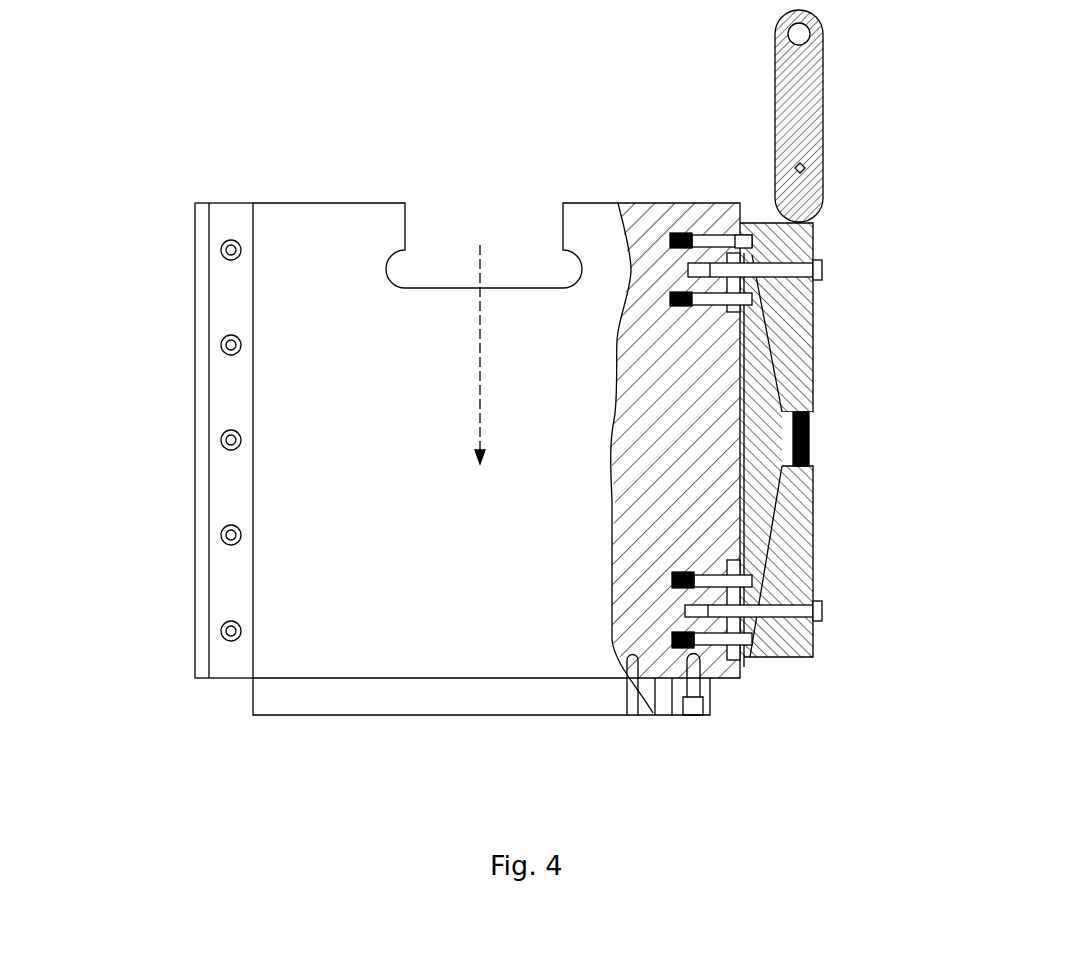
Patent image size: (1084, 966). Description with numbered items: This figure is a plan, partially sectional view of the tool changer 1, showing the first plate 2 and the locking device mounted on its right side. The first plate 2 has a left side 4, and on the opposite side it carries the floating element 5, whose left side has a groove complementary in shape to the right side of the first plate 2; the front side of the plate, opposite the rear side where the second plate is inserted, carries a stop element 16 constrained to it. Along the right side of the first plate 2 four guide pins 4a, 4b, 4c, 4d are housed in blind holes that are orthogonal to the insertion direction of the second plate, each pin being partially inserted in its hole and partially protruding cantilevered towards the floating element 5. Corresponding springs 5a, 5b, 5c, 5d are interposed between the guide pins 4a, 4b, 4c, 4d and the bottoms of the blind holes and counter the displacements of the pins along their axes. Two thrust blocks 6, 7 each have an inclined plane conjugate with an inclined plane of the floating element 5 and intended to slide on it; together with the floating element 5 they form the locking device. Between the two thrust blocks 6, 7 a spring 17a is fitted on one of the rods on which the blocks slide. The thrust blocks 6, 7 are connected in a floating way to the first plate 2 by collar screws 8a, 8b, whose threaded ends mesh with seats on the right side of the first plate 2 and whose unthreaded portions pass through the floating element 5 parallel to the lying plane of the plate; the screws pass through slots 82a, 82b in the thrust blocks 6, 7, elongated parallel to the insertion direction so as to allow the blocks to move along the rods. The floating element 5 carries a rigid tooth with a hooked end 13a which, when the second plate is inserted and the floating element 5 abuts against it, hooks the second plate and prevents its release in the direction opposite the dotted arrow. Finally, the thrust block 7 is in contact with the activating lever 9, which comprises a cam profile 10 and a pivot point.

The tool changer 1 is at (158, 377).
The first plate 2 is at (265, 668).
The left side 4 is at (233, 483).
The guide pin 4a is at (712, 240).
The guide pin 4b is at (710, 297).
The guide pin 4c is at (748, 582).
The guide pin 4d is at (750, 640).
The floating element 5 is at (758, 392).
The spring 5a is at (686, 232).
The spring 5b is at (672, 296).
The spring 5c is at (738, 545).
The spring 5d is at (708, 648).
The thrust block 6 is at (813, 497).
The thrust block 7 is at (813, 341).
The collar screw 8a is at (818, 611).
The collar screw 8b is at (815, 262).
The slot 82a is at (805, 591).
The slot 82b is at (805, 283).
The activating lever 9 is at (806, 138).
The cam profile 10 is at (800, 216).
The hooked end 13a is at (716, 228).
The stop element 16 is at (495, 694).
The spring 17a is at (810, 437).